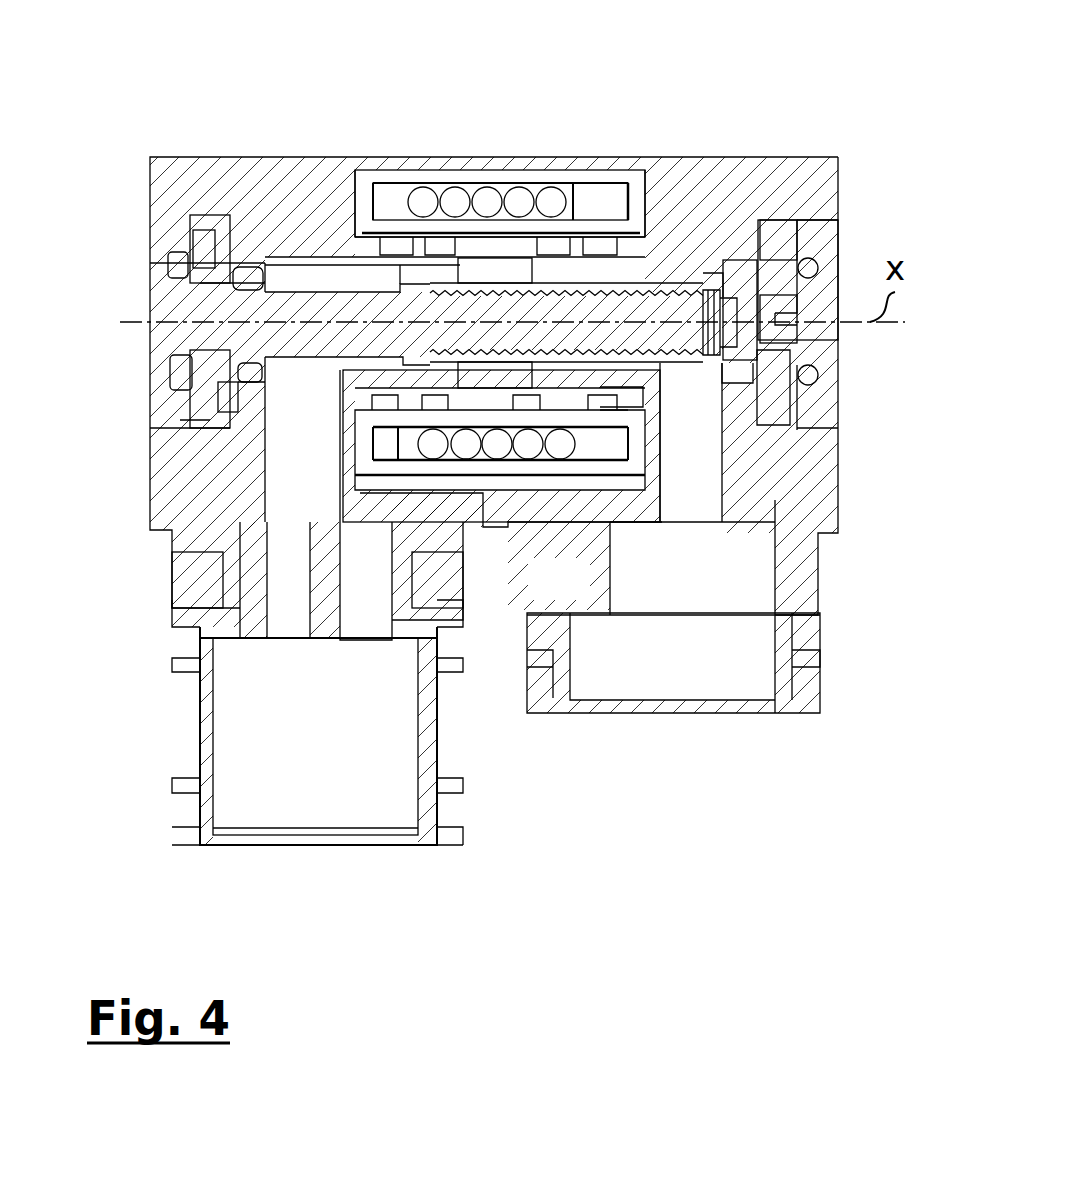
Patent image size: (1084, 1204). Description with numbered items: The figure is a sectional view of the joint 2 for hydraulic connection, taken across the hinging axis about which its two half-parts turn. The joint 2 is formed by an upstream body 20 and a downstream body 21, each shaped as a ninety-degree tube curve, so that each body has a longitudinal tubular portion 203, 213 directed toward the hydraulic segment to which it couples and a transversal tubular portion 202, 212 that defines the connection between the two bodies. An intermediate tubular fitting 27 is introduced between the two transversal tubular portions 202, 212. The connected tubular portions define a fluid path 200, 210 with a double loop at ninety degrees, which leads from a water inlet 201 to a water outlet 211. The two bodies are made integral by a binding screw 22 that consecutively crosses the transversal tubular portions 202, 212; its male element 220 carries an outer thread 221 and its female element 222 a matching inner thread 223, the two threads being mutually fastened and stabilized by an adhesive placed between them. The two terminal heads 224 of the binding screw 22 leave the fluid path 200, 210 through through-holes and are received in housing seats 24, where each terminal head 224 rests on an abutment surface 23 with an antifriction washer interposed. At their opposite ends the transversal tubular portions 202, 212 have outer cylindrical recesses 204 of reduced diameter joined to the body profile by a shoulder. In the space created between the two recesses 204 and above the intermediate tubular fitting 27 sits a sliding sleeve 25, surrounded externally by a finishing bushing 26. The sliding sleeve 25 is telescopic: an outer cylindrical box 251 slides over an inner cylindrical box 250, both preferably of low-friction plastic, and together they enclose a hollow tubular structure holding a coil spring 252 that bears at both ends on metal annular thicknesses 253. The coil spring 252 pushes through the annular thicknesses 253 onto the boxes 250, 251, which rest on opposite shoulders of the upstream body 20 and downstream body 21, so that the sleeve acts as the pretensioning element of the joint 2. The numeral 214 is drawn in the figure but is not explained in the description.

The joint 2 is at (647, 860).
The upstream body 20 is at (160, 175).
The downstream body 21 is at (800, 550).
The binding screw 22 is at (288, 356).
The abutment surface 23 is at (230, 258).
The housing seat 24 is at (185, 420).
The sliding sleeve 25 is at (495, 500).
The finishing bushing 26 is at (520, 470).
The intermediate tubular fitting 27 is at (513, 375).
The fluid path 200 is at (340, 754).
The water inlet 201 is at (250, 830).
The transversal tubular portion 202 is at (323, 200).
The longitudinal tubular portion 203 is at (210, 650).
The outer cylindrical recess 204 is at (400, 292).
The fluid path 210 is at (650, 598).
The water outlet 211 is at (695, 693).
The transversal tubular portion 212 is at (697, 220).
The longitudinal tubular portion 213 is at (785, 620).
The bearing ring 214 is at (623, 243).
The male element 220 is at (313, 312).
The outer thread 221 is at (415, 242).
The female element 222 is at (670, 283).
The inner thread 223 is at (716, 297).
The terminal head 224 is at (197, 243).
The inner cylindrical box 250 is at (458, 222).
The outer cylindrical box 251 is at (557, 177).
The coil spring 252 is at (512, 198).
The metal annular thickness 253 is at (600, 448).